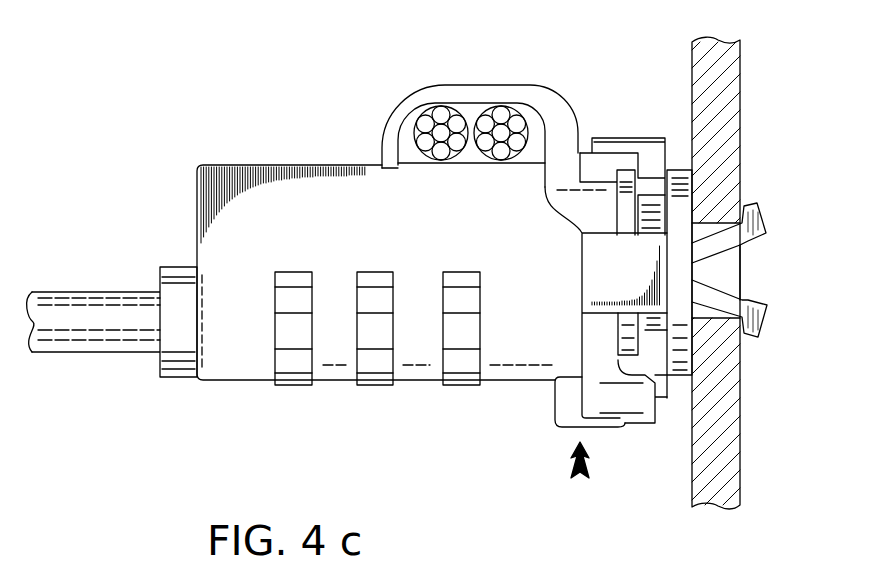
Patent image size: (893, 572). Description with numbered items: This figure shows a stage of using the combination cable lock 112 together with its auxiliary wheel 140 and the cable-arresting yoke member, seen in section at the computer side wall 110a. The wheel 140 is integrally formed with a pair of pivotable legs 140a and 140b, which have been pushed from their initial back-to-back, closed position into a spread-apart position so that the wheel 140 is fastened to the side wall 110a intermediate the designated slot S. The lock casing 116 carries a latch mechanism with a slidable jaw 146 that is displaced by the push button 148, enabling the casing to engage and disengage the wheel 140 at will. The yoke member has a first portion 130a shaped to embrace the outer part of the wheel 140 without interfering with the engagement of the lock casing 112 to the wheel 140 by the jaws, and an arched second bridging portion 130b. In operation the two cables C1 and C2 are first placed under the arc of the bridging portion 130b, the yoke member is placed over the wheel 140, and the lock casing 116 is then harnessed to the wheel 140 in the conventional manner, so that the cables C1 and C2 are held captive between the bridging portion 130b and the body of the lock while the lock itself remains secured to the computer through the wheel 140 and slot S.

The combination cable lock 112 is at (187, 404).
The lock casing 116 is at (197, 165).
The first portion of yoke member 130a is at (628, 403).
The second bridging portion of yoke member 130b is at (405, 112).
The wheel 140 is at (682, 176).
The first pivotable leg 140a is at (822, 205).
The second pivotable leg 140b is at (760, 332).
The slidable jaw 146 is at (612, 143).
The push button 148 is at (563, 407).
The computer side wall 110a is at (723, 80).
The first cable C1 is at (507, 118).
The second cable C2 is at (433, 118).
The slot S is at (732, 270).